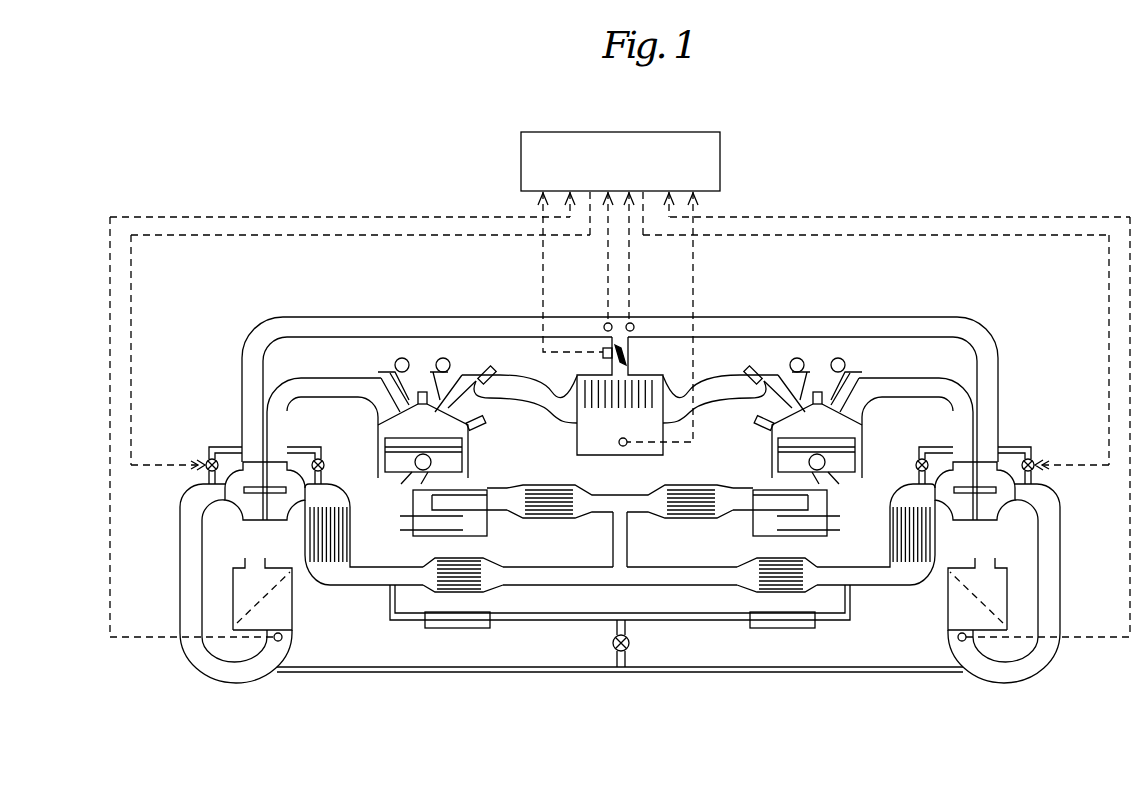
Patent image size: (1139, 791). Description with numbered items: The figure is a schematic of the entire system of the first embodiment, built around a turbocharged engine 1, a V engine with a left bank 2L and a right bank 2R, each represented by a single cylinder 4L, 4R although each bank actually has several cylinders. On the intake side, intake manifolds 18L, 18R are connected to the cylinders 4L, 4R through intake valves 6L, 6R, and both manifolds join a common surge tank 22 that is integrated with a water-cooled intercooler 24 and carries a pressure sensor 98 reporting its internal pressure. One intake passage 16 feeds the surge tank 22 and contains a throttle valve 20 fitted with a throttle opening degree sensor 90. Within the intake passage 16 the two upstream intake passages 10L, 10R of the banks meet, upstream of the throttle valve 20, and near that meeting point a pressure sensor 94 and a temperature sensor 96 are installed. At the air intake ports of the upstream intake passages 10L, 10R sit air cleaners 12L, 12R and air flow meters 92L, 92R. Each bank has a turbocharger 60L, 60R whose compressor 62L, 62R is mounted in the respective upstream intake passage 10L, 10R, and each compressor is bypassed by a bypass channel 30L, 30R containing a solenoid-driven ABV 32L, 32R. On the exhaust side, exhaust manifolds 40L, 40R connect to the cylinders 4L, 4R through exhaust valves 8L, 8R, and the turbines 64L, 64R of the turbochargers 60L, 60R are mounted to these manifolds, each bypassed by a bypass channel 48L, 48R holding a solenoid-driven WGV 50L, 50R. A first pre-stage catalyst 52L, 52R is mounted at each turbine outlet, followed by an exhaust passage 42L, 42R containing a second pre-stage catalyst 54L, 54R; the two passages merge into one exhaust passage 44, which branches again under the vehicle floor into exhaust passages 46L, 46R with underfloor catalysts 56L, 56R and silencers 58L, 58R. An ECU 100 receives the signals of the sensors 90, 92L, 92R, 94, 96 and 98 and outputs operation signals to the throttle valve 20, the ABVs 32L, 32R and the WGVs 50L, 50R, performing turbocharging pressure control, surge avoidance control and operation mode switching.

The turbocharged engine 1 is at (1017, 305).
The left bank 2L is at (410, 302).
The right bank 2R is at (810, 302).
The cylinder 4L is at (470, 435).
The cylinder 4R is at (791, 421).
The intake valve 6L is at (470, 406).
The intake valve 6R is at (766, 400).
The exhaust valve 8L is at (380, 385).
The exhaust valve 8R is at (902, 410).
The upstream intake passage 10L is at (328, 476).
The upstream intake passage 10R is at (912, 476).
The air cleaner 12L is at (292, 597).
The air cleaner 12R is at (952, 594).
The intake passage 16 is at (644, 336).
The intake manifold 18L is at (513, 360).
The intake manifold 18R is at (722, 320).
The throttle valve 20 is at (630, 355).
The surge tank 22 is at (603, 456).
The water-cooled intercooler 24 is at (570, 400).
The bypass channel 30L is at (231, 447).
The bypass channel 30R is at (1020, 438).
The ABV 32L is at (205, 458).
The ABV 32R is at (1059, 444).
The exhaust manifold 40L is at (299, 345).
The exhaust manifold 40R is at (869, 371).
The exhaust passage 42L is at (537, 570).
The exhaust passage 42R is at (678, 557).
The exhaust passage 44 is at (612, 553).
The exhaust passage 46L is at (495, 490).
The exhaust passage 46R is at (745, 481).
The bypass channel 48L is at (307, 447).
The bypass channel 48R is at (929, 442).
The WGV 50L is at (323, 460).
The WGV 50R is at (898, 447).
The first pre-stage catalyst 52L is at (349, 545).
The first pre-stage catalyst 52R is at (886, 535).
The second pre-stage catalyst 54L is at (470, 593).
The second pre-stage catalyst 54R is at (735, 593).
The underfloor catalyst 56L is at (560, 485).
The underfloor catalyst 56R is at (676, 483).
The silencer 58L is at (413, 500).
The silencer 58R is at (817, 511).
The turbocharger 60L is at (273, 524).
The turbocharger 60R is at (967, 524).
The compressor 62L is at (238, 517).
The compressor 62R is at (1059, 560).
The turbine 64L is at (272, 522).
The turbine 64R is at (895, 534).
The throttle opening degree sensor 90 is at (603, 355).
The air flow meter 92L is at (283, 641).
The air flow meter 92R is at (927, 649).
The pressure sensor 94 is at (605, 323).
The temperature sensor 96 is at (633, 323).
The pressure sensor 98 is at (625, 447).
The ECU 100 is at (722, 160).